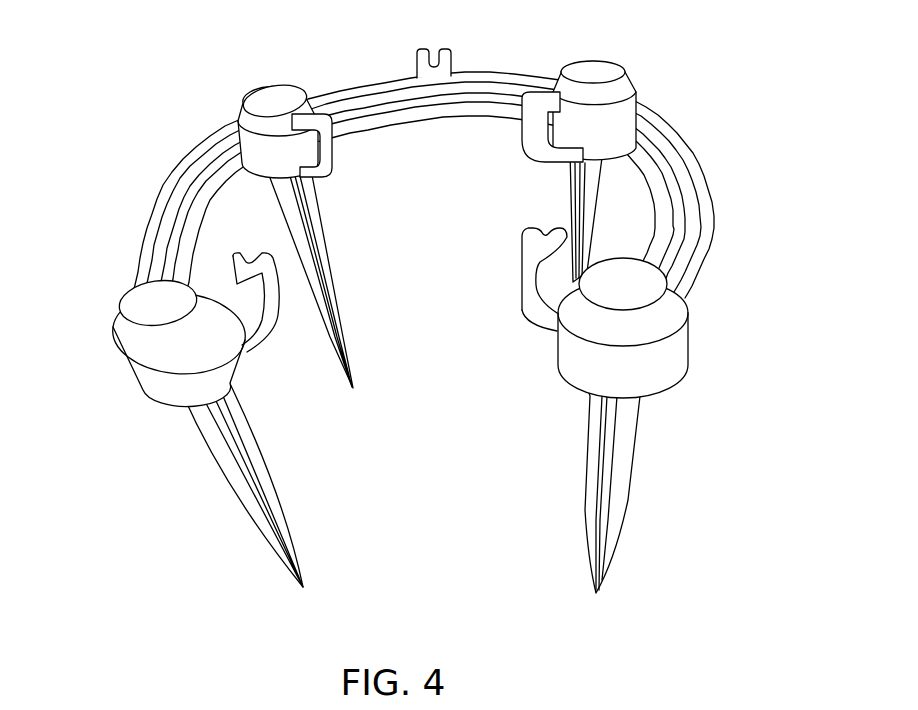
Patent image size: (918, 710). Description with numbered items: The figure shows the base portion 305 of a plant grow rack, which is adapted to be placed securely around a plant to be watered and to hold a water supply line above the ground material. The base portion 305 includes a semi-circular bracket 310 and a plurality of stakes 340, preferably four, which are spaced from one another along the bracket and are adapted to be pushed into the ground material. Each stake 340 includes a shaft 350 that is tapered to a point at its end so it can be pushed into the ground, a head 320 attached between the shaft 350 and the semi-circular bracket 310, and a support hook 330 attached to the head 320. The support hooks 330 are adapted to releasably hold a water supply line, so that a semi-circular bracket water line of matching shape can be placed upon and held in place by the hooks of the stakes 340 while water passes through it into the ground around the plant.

The base portion 305 is at (474, 60).
The semi-circular bracket 310 is at (394, 94).
The head 320 is at (265, 95).
The support hook 330 is at (293, 153).
The stake 340 is at (290, 217).
The shaft 350 is at (230, 452).